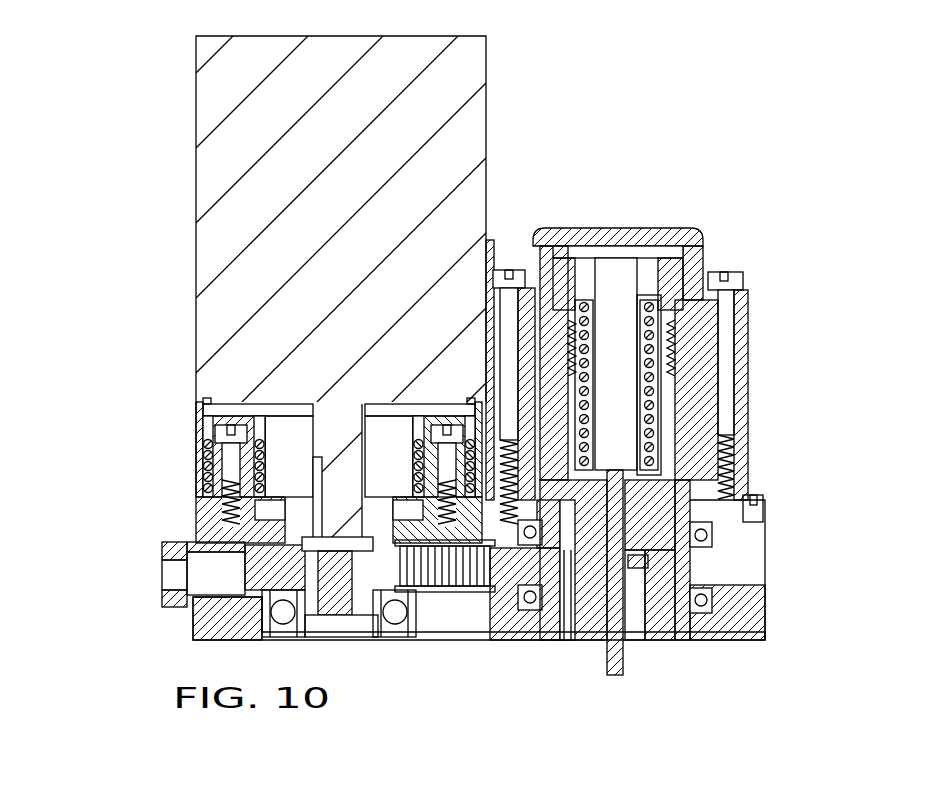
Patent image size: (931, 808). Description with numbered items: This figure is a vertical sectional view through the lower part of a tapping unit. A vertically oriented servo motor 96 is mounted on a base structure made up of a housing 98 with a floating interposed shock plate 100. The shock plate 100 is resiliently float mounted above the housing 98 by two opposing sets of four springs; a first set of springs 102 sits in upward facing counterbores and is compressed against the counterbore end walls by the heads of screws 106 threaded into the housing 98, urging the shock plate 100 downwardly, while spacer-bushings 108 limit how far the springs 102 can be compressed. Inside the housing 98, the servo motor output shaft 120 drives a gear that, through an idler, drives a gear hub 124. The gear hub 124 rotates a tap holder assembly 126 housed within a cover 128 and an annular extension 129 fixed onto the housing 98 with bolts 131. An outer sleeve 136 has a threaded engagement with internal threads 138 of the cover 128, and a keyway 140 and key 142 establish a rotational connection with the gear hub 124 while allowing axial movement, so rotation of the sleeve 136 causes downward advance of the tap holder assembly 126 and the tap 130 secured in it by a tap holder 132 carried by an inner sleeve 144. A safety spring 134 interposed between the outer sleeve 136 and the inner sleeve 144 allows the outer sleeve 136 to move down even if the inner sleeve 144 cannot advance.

The servo motor 96 is at (192, 110).
The housing 98 is at (186, 629).
The shock plate 100 is at (186, 447).
The springs 102 is at (188, 447).
The screws 106 is at (222, 520).
The spacer-bushings 108 is at (217, 470).
The servo motor output shaft 120 is at (337, 442).
The gear hub 124 is at (488, 633).
The tap holder assembly 126 is at (690, 372).
The cover 128 is at (657, 229).
The annular extension 129 is at (748, 312).
The tap 130 is at (625, 672).
The bolts 131 is at (500, 237).
The tap holder 132 is at (645, 570).
The safety spring 134 is at (655, 440).
The outer sleeve 136 is at (672, 400).
The internal threads 138 is at (577, 340).
The keyway 140 is at (586, 632).
The key 142 is at (552, 397).
The inner sleeve 144 is at (648, 500).